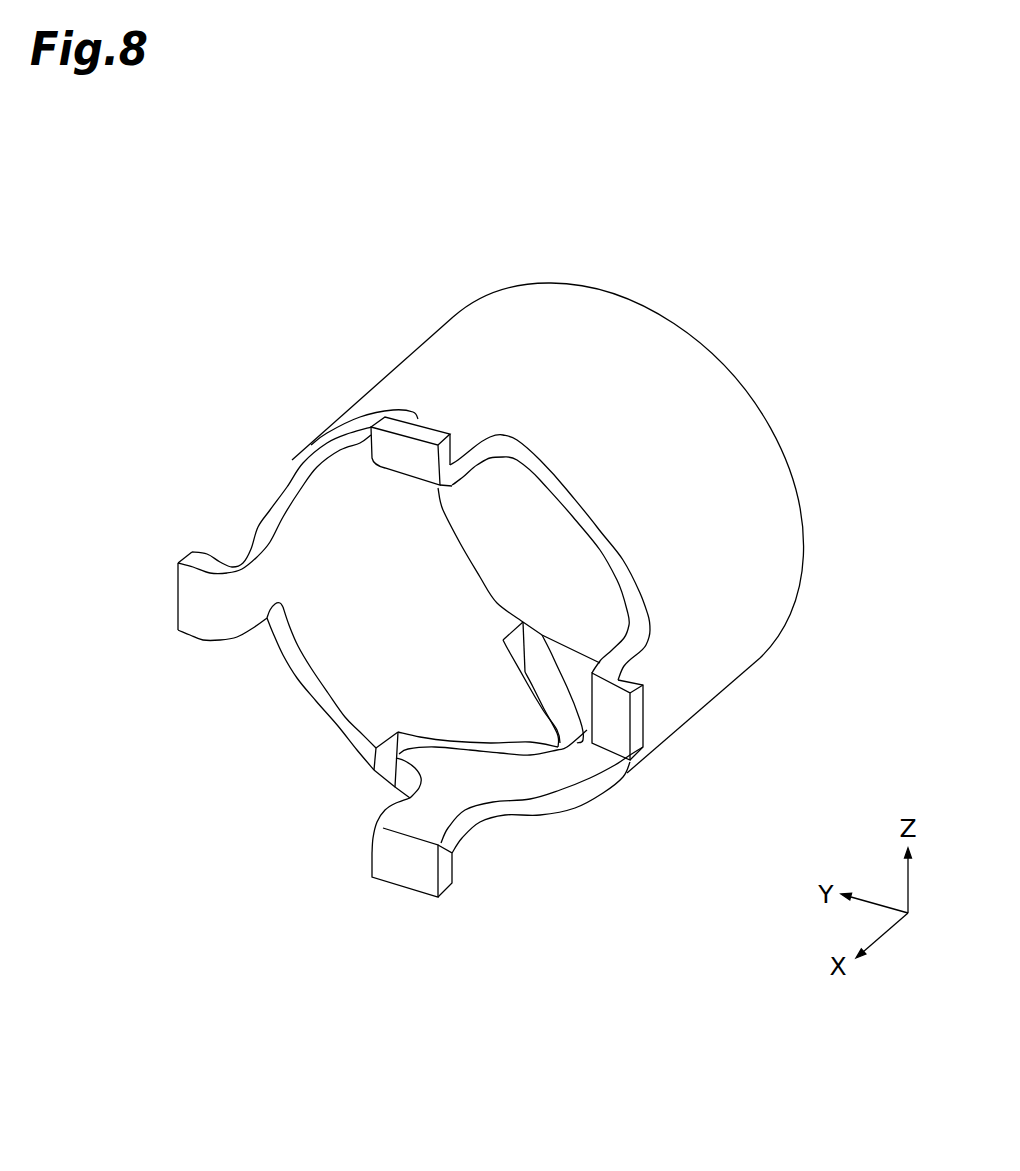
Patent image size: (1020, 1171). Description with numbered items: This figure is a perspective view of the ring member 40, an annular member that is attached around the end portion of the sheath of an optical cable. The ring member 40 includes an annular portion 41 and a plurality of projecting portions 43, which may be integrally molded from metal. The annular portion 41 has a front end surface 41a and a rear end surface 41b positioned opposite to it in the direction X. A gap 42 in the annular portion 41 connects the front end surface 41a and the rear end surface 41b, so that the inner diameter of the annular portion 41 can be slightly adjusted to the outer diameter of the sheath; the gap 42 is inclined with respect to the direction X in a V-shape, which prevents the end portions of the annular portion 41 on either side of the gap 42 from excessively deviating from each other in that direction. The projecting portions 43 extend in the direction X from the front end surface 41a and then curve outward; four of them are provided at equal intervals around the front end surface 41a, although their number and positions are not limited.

The ring member 40 is at (236, 256).
The annular portion 41 is at (435, 350).
The front end surface 41a is at (305, 682).
The rear end surface 41b is at (740, 377).
The gap 42 is at (393, 767).
The projecting portions 43 is at (385, 455).